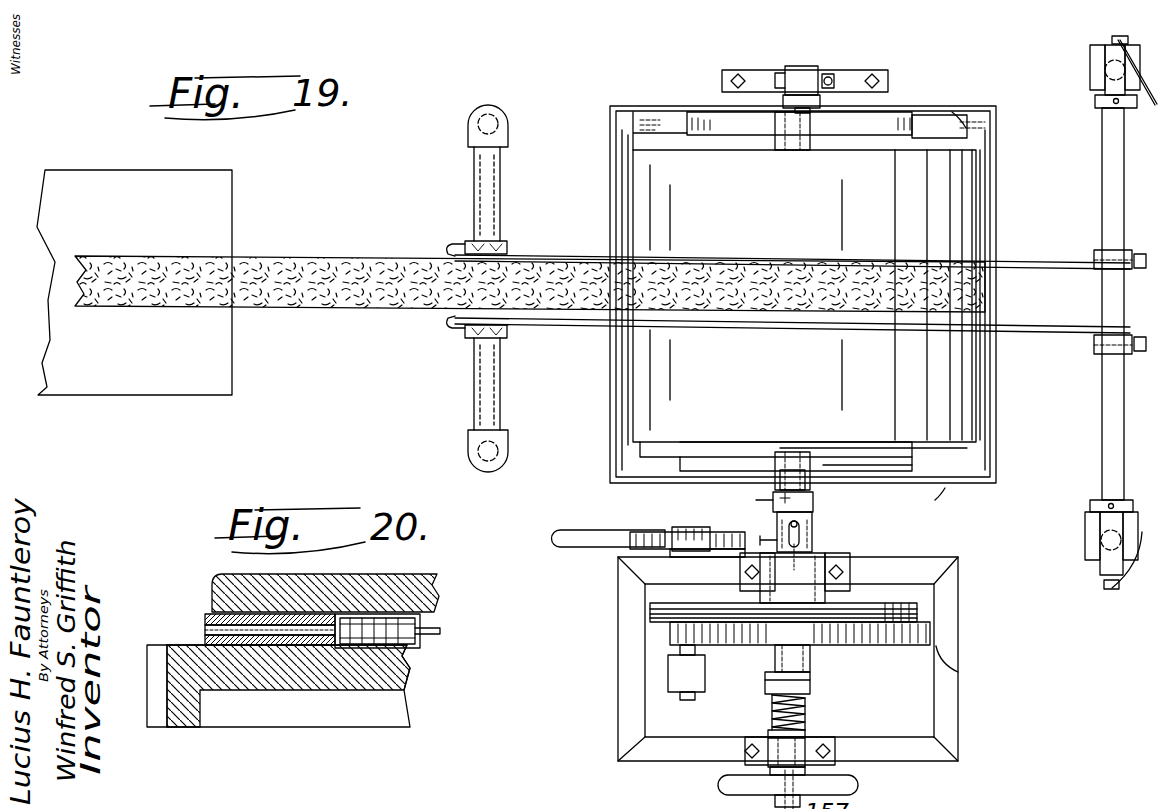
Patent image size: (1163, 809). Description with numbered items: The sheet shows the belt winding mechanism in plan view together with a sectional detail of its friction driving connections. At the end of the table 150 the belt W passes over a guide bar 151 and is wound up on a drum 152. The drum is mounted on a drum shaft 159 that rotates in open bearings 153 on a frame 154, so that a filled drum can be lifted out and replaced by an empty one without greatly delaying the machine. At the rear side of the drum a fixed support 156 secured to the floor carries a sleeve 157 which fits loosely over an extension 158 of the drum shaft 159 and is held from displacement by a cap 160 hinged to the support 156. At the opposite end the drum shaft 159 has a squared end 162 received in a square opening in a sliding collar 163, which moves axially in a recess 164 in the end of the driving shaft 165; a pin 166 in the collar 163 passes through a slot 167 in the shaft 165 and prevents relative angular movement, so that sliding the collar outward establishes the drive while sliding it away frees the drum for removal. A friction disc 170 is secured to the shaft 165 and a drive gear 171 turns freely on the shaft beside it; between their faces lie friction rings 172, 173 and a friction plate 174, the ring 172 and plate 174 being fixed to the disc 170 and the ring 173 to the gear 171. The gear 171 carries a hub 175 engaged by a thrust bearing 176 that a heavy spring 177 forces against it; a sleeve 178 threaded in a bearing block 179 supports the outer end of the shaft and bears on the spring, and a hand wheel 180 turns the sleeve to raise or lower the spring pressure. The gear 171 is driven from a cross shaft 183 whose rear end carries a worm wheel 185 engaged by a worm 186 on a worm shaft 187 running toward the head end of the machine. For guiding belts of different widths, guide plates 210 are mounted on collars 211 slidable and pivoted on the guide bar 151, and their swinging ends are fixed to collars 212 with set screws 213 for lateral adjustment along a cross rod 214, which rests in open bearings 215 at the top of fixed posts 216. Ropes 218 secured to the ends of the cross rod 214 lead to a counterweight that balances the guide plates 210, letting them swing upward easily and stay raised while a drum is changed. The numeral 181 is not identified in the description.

In FIG. 19, the table 150 is at (232, 215).
In FIG. 19, the belt W is at (335, 296).
In FIG. 19, the guide bar 151 is at (474, 205).
In FIG. 19, the drum 152 is at (650, 392).
In FIG. 19, the open bearings 153 is at (758, 136).
In FIG. 19, the frame 154 is at (967, 306).
In FIG. 19, the fixed support 156 is at (722, 81).
In FIG. 19, the sleeve 157 is at (797, 66).
In FIG. 19, the extension 158 is at (820, 102).
In FIG. 19, the drum shaft 159 is at (800, 150).
In FIG. 19, the cap 160 is at (826, 76).
In FIG. 19, the squared end 162 is at (780, 488).
In FIG. 19, the sliding collar 163 is at (813, 505).
In FIG. 19, the recess 164 is at (812, 540).
In FIG. 19, the driving shaft 165 is at (759, 542).
In FIG. 19, the pin 166 is at (759, 517).
In FIG. 19, the slot 167 is at (805, 556).
In FIG. 19, the friction disc 170 is at (845, 616).
In FIG. 20, the friction disc 170 is at (214, 582).
In FIG. 19, the drive gear 171 is at (958, 672).
In FIG. 20, the drive gear 171 is at (162, 676).
In FIG. 19, the friction ring 172 is at (920, 612).
In FIG. 20, the friction ring 172 is at (208, 614).
In FIG. 19, the friction ring 173 is at (932, 632).
In FIG. 20, the friction ring 173 is at (205, 639).
In FIG. 19, the friction plate 174 is at (920, 622).
In FIG. 20, the friction plate 174 is at (205, 629).
In FIG. 19, the hub 175 is at (812, 662).
In FIG. 19, the thrust bearing 176 is at (812, 688).
In FIG. 19, the spring 177 is at (806, 713).
In FIG. 19, the sleeve 178 is at (768, 732).
In FIG. 19, the bearing block 179 is at (826, 750).
In FIG. 19, the hand wheel 180 is at (852, 786).
In FIG. 19, the frame 181 is at (618, 716).
In FIG. 19, the cross shaft 183 is at (688, 702).
In FIG. 19, the worm wheel 185 is at (648, 526).
In FIG. 19, the worm 186 is at (700, 526).
In FIG. 19, the worm shaft 187 is at (585, 526).
In FIG. 19, the guide plates 210 is at (580, 257).
In FIG. 19, the collars 211 is at (506, 248).
In FIG. 19, the collars 212 is at (1094, 258).
In FIG. 19, the set screws 213 is at (1138, 320).
In FIG. 19, the cross rod 214 is at (1102, 158).
In FIG. 19, the open bearings 215 is at (1095, 60).
In FIG. 19, the fixed posts 216 is at (1104, 86).
In FIG. 19, the ropes 218 is at (1103, 614).